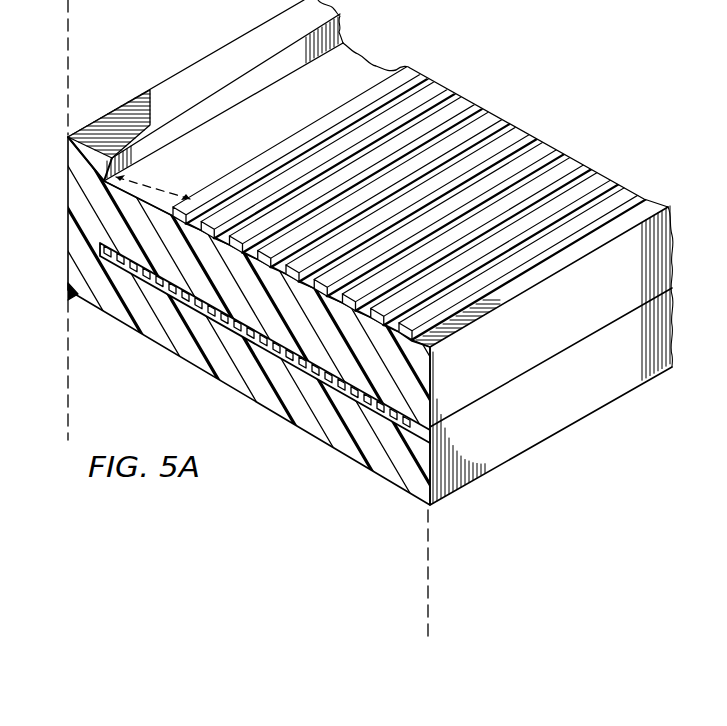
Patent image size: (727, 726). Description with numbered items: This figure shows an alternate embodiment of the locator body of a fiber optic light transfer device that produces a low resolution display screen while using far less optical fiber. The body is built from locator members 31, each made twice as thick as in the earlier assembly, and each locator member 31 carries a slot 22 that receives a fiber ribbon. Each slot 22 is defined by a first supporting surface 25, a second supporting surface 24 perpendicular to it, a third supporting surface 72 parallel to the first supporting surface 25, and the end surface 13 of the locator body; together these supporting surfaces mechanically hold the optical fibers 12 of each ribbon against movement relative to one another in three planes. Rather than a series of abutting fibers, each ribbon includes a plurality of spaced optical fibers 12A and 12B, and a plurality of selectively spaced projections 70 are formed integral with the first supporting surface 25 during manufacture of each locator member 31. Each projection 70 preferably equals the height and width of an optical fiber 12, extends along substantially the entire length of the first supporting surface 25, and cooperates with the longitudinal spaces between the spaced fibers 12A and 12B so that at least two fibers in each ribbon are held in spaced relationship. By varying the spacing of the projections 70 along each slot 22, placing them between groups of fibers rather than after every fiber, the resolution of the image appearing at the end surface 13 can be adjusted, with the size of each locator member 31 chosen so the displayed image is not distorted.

The optical fibers 12 is at (300, 374).
The spaced optical fiber 12A is at (393, 217).
The spaced optical fiber 12B is at (542, 137).
The end surface 13 is at (413, 327).
The slot 22 is at (150, 287).
The second supporting surface 24 is at (218, 102).
The first supporting surface 25 is at (143, 173).
The locator member 31 is at (553, 334).
The projection 70 is at (253, 183).
The third supporting surface 72 is at (102, 191).